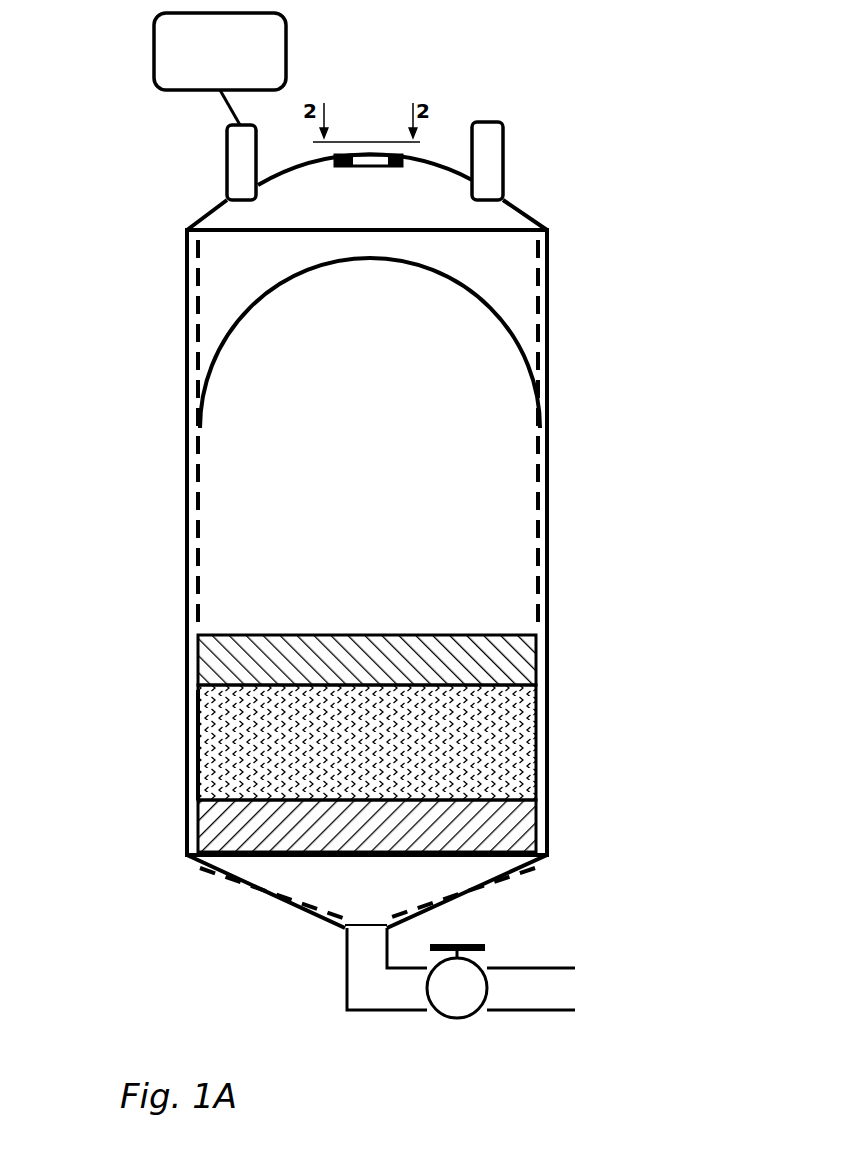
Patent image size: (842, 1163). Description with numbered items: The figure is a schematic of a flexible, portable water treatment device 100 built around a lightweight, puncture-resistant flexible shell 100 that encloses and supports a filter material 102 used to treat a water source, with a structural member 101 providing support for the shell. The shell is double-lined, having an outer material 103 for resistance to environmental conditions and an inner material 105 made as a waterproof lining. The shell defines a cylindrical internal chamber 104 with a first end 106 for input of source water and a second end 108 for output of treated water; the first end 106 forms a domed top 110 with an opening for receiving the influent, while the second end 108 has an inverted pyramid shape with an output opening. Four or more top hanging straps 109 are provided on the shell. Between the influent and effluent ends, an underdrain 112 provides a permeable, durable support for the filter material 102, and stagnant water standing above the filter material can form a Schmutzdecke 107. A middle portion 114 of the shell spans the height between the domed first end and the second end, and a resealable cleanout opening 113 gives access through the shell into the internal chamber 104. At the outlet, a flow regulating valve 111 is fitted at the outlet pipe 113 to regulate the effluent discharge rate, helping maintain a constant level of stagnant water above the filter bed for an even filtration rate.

The water treatment device / flexible shell 100 is at (163, 267).
The structural member 101 is at (220, 106).
The filter material 102 is at (477, 750).
The outer material 103 is at (187, 689).
The internal chamber 104 is at (485, 610).
The inner material 105 is at (190, 757).
The first end 106 is at (508, 263).
The Schmutzdecke 107 is at (490, 662).
The second end 108 is at (380, 883).
The top hanging straps 109 is at (504, 162).
The domed top 110 is at (428, 187).
The flow regulating valve 111 is at (455, 1008).
The underdrain 112 is at (500, 838).
The resealable cleanout opening / outlet pipe 113 is at (490, 305).
The middle portion 114 is at (280, 515).